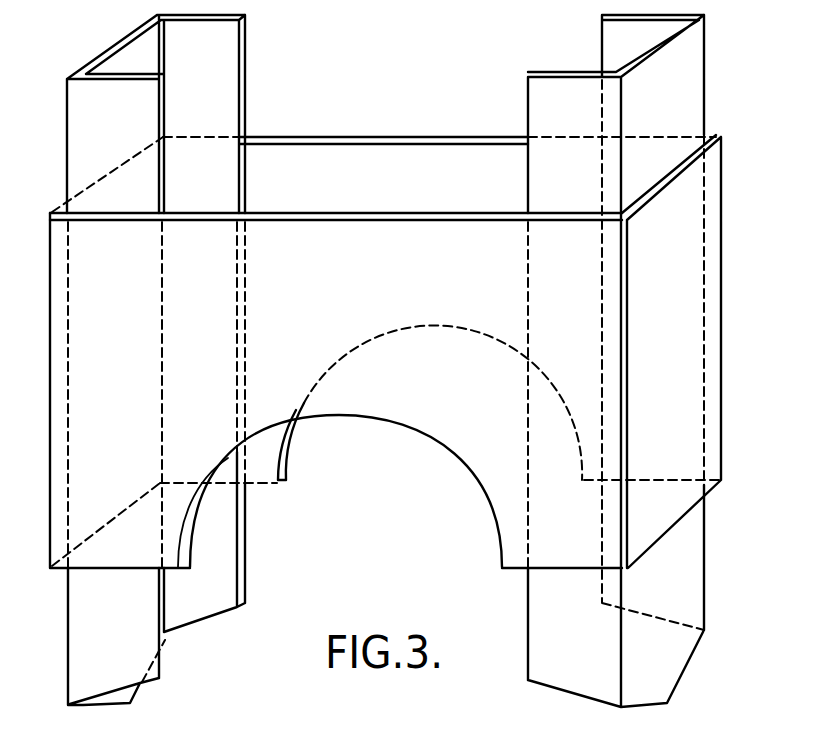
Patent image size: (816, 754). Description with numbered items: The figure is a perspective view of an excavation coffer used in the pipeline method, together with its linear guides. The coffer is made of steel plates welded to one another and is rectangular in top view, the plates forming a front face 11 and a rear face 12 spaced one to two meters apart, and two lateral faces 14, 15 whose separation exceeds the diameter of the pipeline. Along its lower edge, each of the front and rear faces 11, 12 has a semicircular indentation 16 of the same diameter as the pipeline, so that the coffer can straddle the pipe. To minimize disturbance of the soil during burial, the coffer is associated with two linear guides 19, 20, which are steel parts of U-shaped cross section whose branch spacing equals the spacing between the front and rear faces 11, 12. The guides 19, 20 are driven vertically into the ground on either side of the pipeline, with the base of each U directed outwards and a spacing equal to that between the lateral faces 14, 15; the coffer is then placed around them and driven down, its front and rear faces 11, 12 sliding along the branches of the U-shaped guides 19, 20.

The front face 11 is at (355, 217).
The rear face 12 is at (435, 137).
The lateral face 14 is at (63, 217).
The lateral face 15 is at (662, 180).
The semicircular indentation 16 is at (492, 348).
The linear guide 19 is at (108, 50).
The linear guide 20 is at (616, 30).